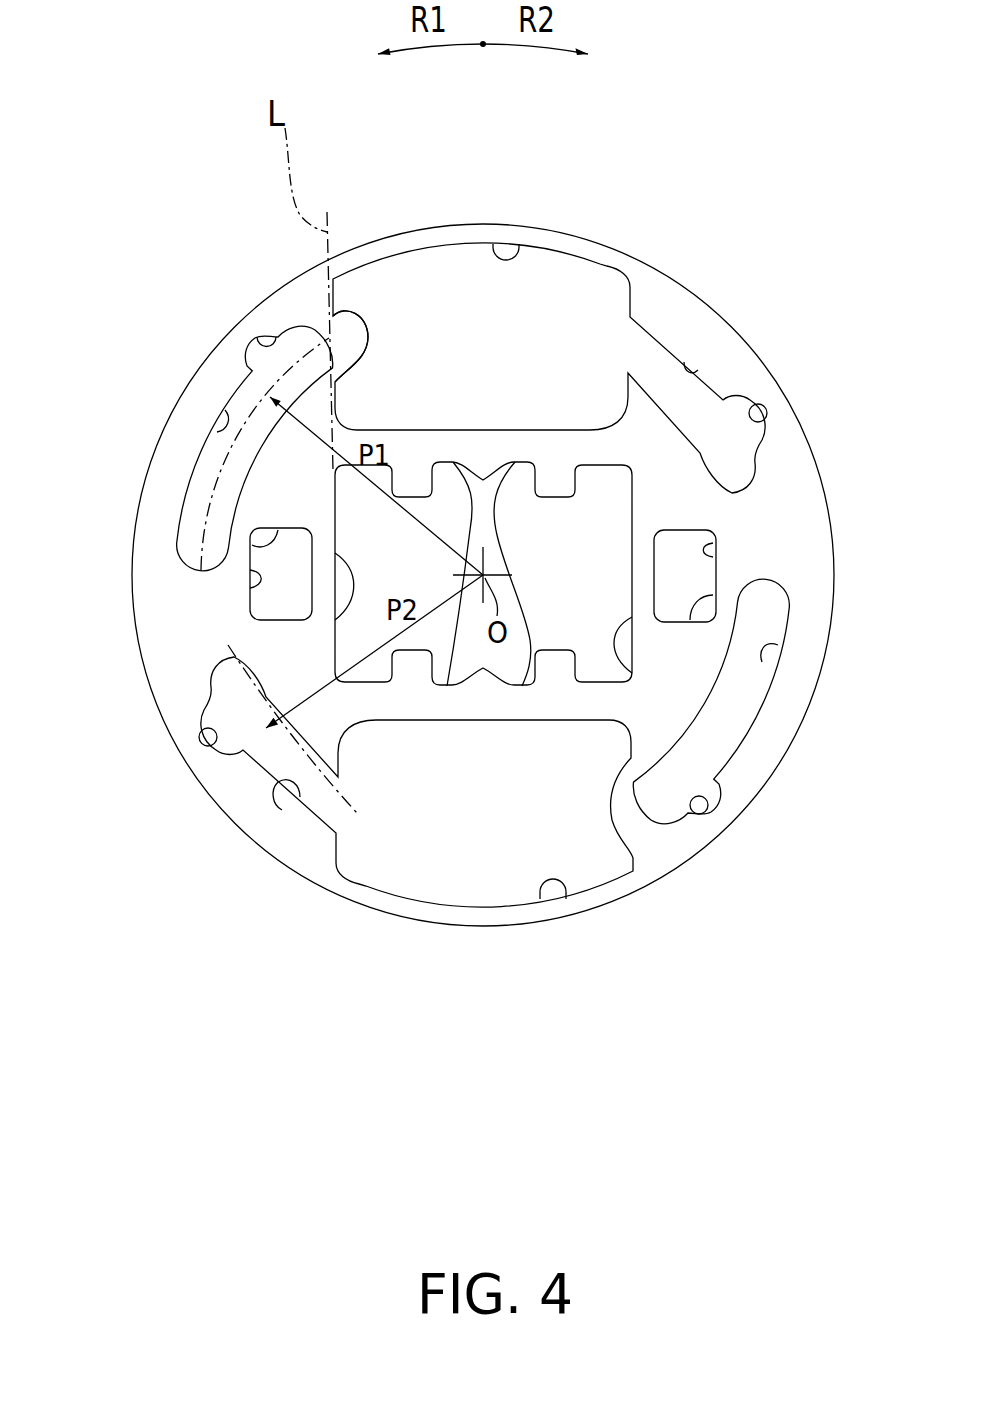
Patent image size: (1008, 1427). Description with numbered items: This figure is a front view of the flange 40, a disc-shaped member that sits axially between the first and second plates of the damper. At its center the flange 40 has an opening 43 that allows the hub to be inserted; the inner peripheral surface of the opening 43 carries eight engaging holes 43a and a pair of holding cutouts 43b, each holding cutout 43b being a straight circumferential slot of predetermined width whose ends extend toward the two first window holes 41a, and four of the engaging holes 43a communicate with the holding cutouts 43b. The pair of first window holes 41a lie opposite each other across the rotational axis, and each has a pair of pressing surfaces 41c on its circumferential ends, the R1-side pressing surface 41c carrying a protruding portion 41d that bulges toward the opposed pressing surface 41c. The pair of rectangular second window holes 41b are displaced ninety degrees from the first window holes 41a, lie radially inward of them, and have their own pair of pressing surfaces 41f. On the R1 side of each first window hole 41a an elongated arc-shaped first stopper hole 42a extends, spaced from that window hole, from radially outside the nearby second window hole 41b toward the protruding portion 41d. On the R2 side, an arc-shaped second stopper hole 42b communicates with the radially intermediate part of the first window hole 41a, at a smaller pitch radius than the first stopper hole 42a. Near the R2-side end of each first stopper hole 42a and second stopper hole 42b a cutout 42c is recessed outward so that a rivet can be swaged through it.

The flange 40 is at (728, 262).
The first window hole 41a is at (506, 244).
The second window hole 41b is at (252, 590).
The pressing surface 41c is at (630, 302).
The protruding portion 41d is at (330, 312).
The pressing surface 41f is at (253, 540).
The first stopper hole 42a is at (218, 432).
The second stopper hole 42b is at (702, 372).
The cutout 42c is at (260, 336).
The opening 43 is at (430, 634).
The engaging hole 43a is at (490, 468).
The holding cutout 43b is at (335, 620).